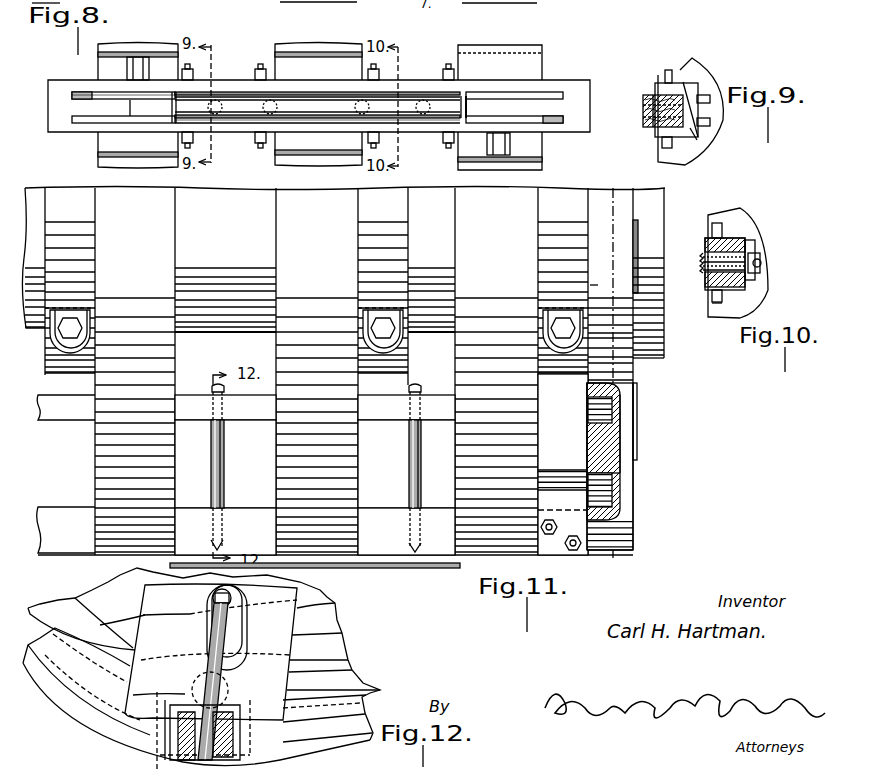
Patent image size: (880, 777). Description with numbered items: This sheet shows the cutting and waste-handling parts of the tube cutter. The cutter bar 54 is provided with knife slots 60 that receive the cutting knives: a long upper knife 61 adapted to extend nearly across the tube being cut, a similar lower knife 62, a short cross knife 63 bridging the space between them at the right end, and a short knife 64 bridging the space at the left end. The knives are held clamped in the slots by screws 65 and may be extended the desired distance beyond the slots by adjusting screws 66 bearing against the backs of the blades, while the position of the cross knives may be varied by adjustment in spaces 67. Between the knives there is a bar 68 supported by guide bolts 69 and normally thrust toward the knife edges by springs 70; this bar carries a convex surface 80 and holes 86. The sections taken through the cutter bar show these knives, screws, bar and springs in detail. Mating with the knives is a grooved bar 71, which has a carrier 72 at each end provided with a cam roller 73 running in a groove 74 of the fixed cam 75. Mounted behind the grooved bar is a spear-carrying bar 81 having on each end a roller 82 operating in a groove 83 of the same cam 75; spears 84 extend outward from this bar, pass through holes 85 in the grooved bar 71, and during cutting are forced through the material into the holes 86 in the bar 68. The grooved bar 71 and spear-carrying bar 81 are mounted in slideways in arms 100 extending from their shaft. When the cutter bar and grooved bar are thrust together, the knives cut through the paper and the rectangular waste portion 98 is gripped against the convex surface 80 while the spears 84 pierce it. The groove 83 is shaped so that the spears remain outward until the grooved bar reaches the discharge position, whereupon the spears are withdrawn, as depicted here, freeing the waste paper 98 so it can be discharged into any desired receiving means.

In FIG. 8, the cutter bar 54 is at (60, 123).
In FIG. 9, the cutter bar 54 is at (686, 74).
In FIG. 10, the cutter bar 54 is at (712, 250).
In FIG. 8, the knife slots 60 is at (563, 93).
In FIG. 8, the long upper knife 61 is at (543, 124).
In FIG. 9, the long upper knife 61 is at (654, 127).
In FIG. 10, the long upper knife 61 is at (712, 283).
In FIG. 8, the lower knife 62 is at (112, 95).
In FIG. 9, the lower knife 62 is at (661, 92).
In FIG. 10, the lower knife 62 is at (710, 252).
In FIG. 8, the short cross knife 63 is at (464, 108).
In FIG. 8, the short knife 64 is at (171, 104).
In FIG. 8, the screws 65 is at (261, 65).
In FIG. 9, the screws 65 is at (669, 70).
In FIG. 10, the screws 65 is at (722, 296).
In FIG. 9, the adjusting screws 66 is at (708, 99).
In FIG. 8, the spaces 67 is at (129, 108).
In FIG. 8, the bar 68 is at (413, 112).
In FIG. 9, the bar 68 is at (648, 120).
In FIG. 10, the bar 68 is at (703, 263).
In FIG. 10, the guide bolts 69 is at (737, 262).
In FIG. 9, the springs 70 is at (699, 142).
In FIG. 11, the grooved bar 71 is at (240, 513).
In FIG. 12, the grooved bar 71 is at (223, 736).
In FIG. 11, the carrier 72 is at (556, 492).
In FIG. 12, the carrier 72 is at (193, 719).
In FIG. 11, the cam roller 73 is at (606, 492).
In FIG. 12, the cam roller 73 is at (233, 690).
In FIG. 11, the groove 74 is at (612, 478).
In FIG. 12, the groove 74 is at (353, 678).
In FIG. 11, the fixed cam 75 is at (628, 375).
In FIG. 12, the fixed cam 75 is at (343, 643).
In FIG. 8, the convex surface 80 is at (320, 105).
In FIG. 9, the convex surface 80 is at (650, 105).
In FIG. 11, the spear-carrying bar 81 is at (197, 413).
In FIG. 12, the spear-carrying bar 81 is at (247, 607).
In FIG. 11, the roller 82 is at (606, 409).
In FIG. 12, the roller 82 is at (207, 618).
In FIG. 11, the groove 83 is at (608, 426).
In FIG. 12, the groove 83 is at (318, 610).
In FIG. 11, the spears 84 is at (222, 457).
In FIG. 12, the spears 84 is at (216, 679).
In FIG. 11, the holes 85 is at (221, 548).
In FIG. 8, the holes 86 is at (215, 106).
In FIG. 11, the rectangular portion 98 is at (401, 569).
In FIG. 12, the arms 100 is at (363, 714).